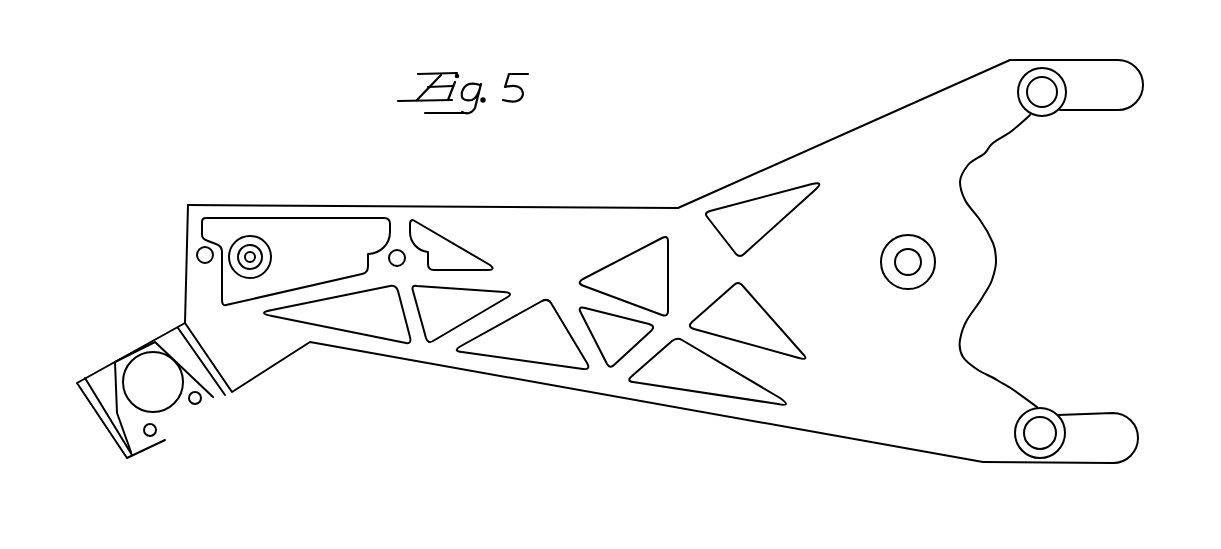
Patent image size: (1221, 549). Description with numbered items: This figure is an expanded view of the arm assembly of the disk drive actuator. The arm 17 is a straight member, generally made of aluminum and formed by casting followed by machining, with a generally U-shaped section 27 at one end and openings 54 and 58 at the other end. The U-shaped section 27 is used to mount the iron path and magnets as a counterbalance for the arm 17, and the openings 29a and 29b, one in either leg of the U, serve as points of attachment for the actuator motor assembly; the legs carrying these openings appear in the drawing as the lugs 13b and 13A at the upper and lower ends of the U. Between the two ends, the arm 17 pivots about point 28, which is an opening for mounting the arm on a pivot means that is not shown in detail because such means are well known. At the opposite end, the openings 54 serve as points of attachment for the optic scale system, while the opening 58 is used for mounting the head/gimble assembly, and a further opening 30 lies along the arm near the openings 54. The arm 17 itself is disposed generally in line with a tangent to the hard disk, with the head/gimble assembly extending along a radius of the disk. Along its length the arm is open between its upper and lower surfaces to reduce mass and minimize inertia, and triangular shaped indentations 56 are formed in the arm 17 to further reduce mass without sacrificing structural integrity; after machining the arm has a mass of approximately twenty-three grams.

The arm 17 is at (618, 213).
The generally U-shaped section 27 is at (875, 142).
The pivot point 28 is at (910, 256).
The opening 29a is at (1040, 443).
The opening 29b is at (1047, 85).
The lower mounting boss 13A is at (1110, 417).
The upper mounting boss 13b is at (1115, 108).
The mounting hole 30 is at (400, 250).
The openings 54 is at (246, 256).
The triangular shaped indentations 56 is at (535, 352).
The opening 58 is at (197, 404).